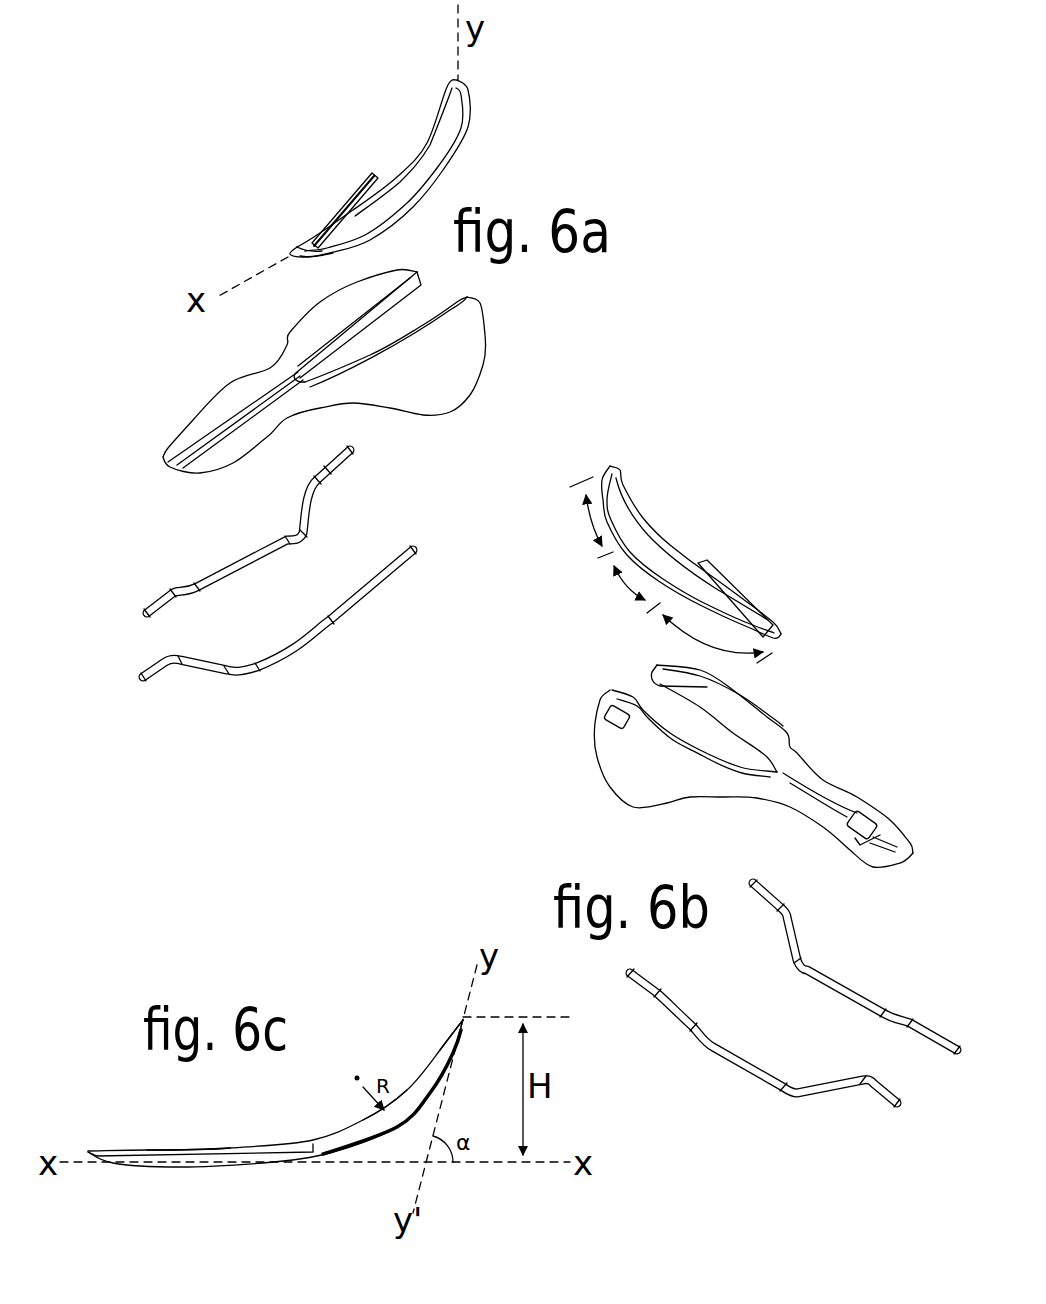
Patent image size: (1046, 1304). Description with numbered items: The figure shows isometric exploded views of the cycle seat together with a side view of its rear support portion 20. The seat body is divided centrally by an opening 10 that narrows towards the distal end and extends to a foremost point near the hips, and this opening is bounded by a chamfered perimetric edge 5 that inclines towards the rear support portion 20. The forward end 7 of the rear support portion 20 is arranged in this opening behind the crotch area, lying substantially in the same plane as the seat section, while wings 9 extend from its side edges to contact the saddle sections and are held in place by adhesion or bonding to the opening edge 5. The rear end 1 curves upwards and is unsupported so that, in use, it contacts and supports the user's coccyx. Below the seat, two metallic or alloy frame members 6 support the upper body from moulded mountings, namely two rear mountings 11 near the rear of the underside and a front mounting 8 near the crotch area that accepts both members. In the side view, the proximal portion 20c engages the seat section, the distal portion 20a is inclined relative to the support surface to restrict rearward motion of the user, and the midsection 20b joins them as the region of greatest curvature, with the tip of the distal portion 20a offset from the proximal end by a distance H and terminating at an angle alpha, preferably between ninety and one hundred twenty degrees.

In FIG. 6a, the rear end 1 is at (458, 82).
In FIG. 6b, the rear end 1 is at (667, 544).
In FIG. 6a, the chamfered perimetric edge 5 is at (408, 291).
In FIG. 6b, the chamfered perimetric edge 5 is at (707, 707).
In FIG. 6a, the frame members 6 is at (278, 563).
In FIG. 6b, the frame members 6 is at (793, 993).
In FIG. 6a, the forward end 7 is at (315, 243).
In FIG. 6b, the front mounting 8 is at (873, 827).
In FIG. 6a, the wings 9 is at (350, 192).
In FIG. 6b, the wings 9 is at (723, 580).
In FIG. 6a, the opening 10 is at (410, 313).
In FIG. 6b, the rear mountings 11 is at (610, 723).
In FIG. 6a, the rear support portion 20 is at (384, 169).
In FIG. 6b, the rear support portion 20 is at (690, 553).
In FIG. 6c, the rear support portion 20 is at (297, 1122).
In FIG. 6b, the distal portion 20a is at (583, 517).
In FIG. 6c, the distal portion 20a is at (463, 1028).
In FIG. 6b, the midsection 20b is at (628, 589).
In FIG. 6c, the midsection 20b is at (407, 1120).
In FIG. 6b, the proximal portion 20c is at (716, 639).
In FIG. 6c, the proximal portion 20c is at (113, 1163).